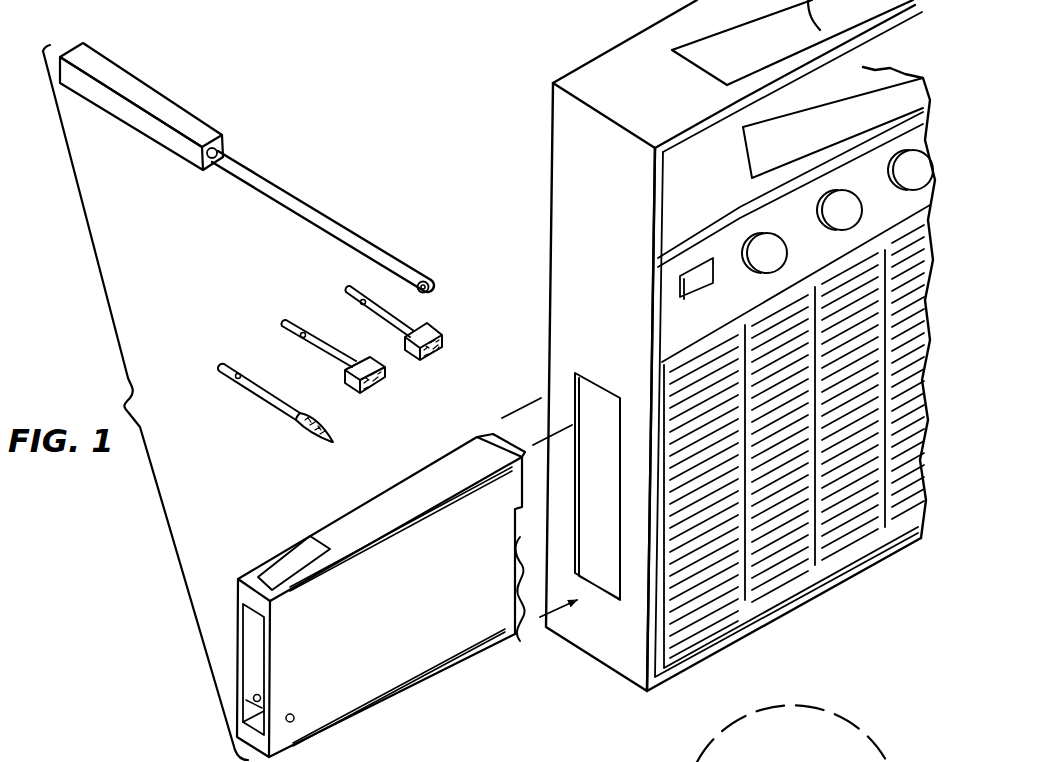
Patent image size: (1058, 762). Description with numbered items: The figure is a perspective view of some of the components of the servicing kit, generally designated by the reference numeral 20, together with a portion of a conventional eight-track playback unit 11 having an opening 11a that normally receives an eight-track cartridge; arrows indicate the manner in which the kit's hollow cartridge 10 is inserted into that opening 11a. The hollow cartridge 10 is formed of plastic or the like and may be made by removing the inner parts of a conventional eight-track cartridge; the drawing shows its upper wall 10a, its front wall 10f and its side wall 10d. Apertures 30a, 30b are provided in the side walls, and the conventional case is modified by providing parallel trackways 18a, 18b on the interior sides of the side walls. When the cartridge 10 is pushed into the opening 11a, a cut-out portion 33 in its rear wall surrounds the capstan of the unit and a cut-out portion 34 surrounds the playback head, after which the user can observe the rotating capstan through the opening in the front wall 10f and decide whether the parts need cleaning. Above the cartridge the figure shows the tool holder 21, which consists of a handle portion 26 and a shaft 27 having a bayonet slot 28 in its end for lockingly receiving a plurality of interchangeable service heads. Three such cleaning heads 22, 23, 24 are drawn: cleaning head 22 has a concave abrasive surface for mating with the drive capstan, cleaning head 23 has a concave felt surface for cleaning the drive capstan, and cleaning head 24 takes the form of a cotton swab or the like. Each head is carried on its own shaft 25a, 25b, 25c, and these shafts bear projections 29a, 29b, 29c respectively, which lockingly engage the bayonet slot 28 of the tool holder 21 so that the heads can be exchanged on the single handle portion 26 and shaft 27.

The hollow cartridge 10 is at (351, 591).
The upper wall 10a is at (443, 441).
The side wall 10d is at (428, 668).
The front wall 10f is at (239, 599).
The 8-track playback unit 11 is at (658, 381).
The opening 11a is at (598, 456).
The trackway 18a is at (244, 722).
The trackway 18b is at (240, 697).
The elements of the kit 20 is at (114, 358).
The tool holder 21 is at (258, 168).
The cleaning head 22 is at (442, 325).
The cleaning head 23 is at (386, 364).
The cleaning head 24 is at (321, 418).
The shaft 25a is at (427, 326).
The shaft 25b is at (355, 353).
The shaft 25c is at (299, 393).
The handle portion 26 is at (147, 86).
The shaft 27 is at (322, 216).
The bayonet slot 28 is at (396, 265).
The projection 29a is at (405, 300).
The projection 29b is at (338, 321).
The projection 29c is at (278, 360).
The aperture 30a is at (337, 703).
The aperture 30b is at (260, 696).
The cut-out portion 33 is at (523, 602).
The cut-out portion 34 is at (520, 537).